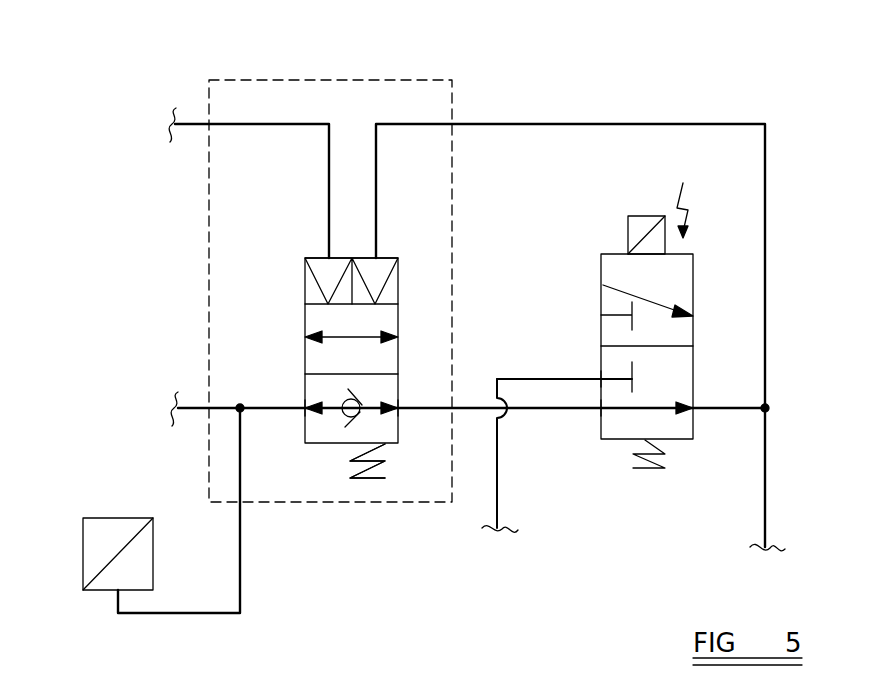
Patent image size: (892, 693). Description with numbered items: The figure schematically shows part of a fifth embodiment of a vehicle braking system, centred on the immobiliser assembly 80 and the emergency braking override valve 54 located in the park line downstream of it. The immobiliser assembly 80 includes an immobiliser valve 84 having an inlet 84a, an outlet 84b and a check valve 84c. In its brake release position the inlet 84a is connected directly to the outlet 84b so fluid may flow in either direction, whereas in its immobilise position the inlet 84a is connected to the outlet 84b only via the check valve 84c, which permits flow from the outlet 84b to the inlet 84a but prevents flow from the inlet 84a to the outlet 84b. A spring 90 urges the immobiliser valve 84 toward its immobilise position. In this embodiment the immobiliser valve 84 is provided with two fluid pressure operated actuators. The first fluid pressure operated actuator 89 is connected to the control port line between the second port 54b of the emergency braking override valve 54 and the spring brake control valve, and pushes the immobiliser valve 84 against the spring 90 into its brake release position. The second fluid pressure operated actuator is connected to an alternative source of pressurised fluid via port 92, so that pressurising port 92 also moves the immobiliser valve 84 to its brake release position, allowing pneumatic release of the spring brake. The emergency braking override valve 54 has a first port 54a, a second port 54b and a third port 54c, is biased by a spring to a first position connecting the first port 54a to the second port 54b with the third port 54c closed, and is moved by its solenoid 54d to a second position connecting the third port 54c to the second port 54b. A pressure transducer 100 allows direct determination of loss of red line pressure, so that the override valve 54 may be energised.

The emergency braking override valve 54 is at (695, 333).
The first port 54a is at (601, 412).
The second port 54b is at (693, 412).
The third port 54c is at (601, 379).
The solenoid 54d is at (628, 216).
The immobiliser assembly 80 is at (432, 68).
The immobiliser valve 84 is at (305, 350).
The inlet 84a is at (305, 410).
The outlet 84b is at (398, 412).
The check valve 84c is at (378, 396).
The fluid pressure operated actuator 89 is at (320, 268).
The spring 90 is at (372, 478).
The port 92 is at (210, 124).
The pressure transducer 100 is at (118, 518).